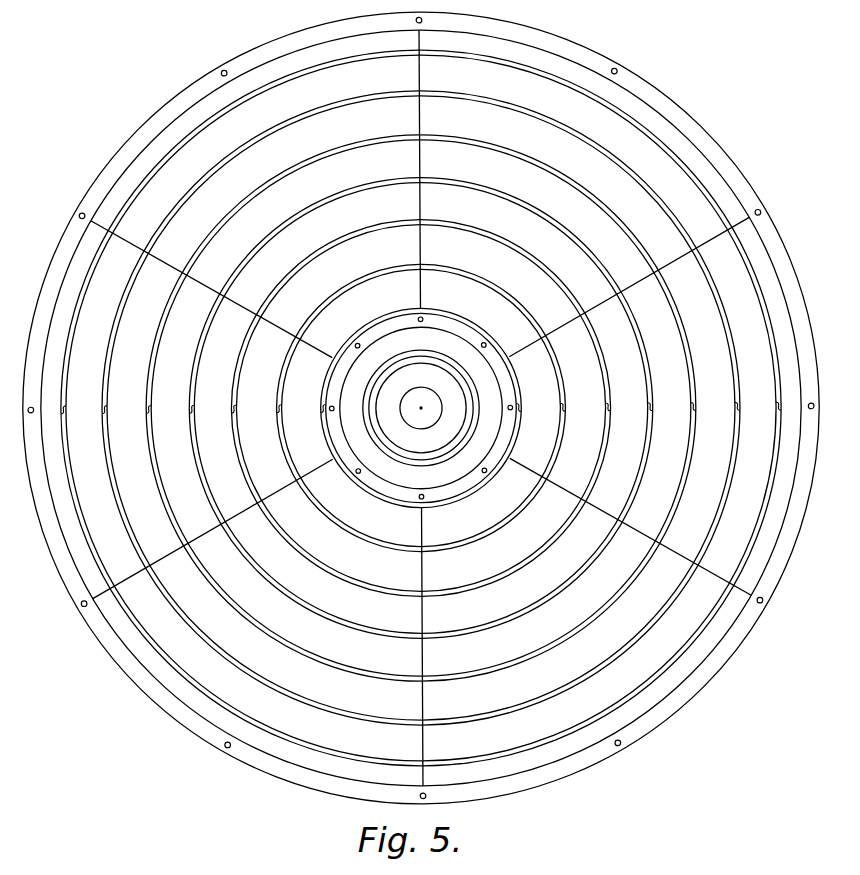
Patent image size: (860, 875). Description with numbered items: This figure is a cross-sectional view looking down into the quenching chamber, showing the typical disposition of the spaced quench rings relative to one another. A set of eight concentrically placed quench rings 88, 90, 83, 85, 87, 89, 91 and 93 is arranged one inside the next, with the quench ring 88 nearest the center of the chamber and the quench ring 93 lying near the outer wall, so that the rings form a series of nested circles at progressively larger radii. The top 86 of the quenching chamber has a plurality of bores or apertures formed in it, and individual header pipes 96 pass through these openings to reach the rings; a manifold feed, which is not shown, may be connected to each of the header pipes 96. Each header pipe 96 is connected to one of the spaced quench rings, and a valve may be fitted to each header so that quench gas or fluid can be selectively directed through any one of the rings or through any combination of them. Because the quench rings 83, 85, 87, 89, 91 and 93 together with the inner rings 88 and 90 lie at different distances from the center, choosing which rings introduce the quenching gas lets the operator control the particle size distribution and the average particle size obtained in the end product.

The quench ring 83 is at (369, 278).
The quench ring 85 is at (344, 240).
The top 86 is at (148, 124).
The quench ring 87 is at (315, 207).
The quench ring 88 is at (432, 354).
The quench ring 89 is at (288, 173).
The quench ring 90 is at (394, 315).
The quench ring 91 is at (257, 140).
The quench ring 93 is at (215, 111).
The header pipe 96 is at (232, 409).